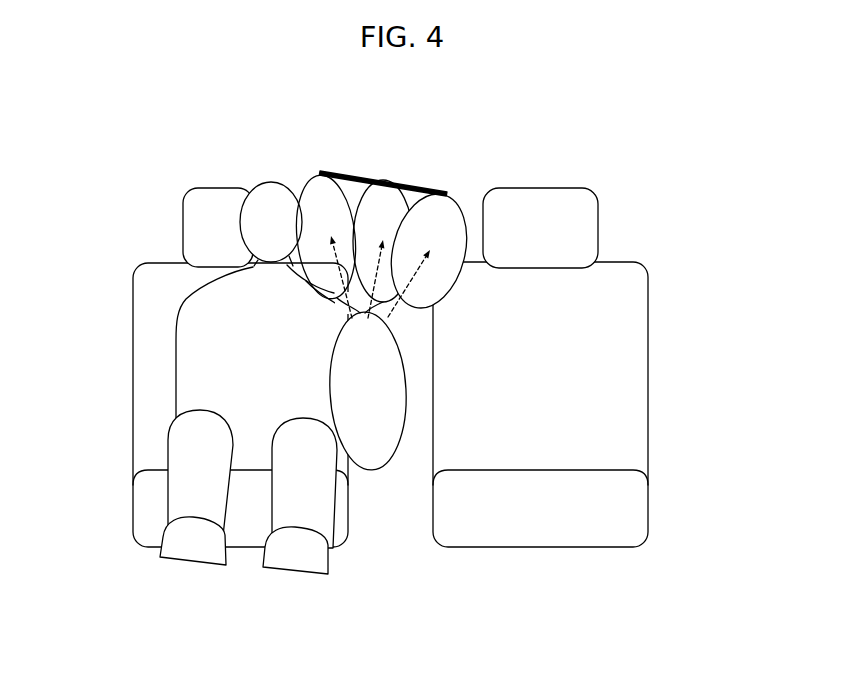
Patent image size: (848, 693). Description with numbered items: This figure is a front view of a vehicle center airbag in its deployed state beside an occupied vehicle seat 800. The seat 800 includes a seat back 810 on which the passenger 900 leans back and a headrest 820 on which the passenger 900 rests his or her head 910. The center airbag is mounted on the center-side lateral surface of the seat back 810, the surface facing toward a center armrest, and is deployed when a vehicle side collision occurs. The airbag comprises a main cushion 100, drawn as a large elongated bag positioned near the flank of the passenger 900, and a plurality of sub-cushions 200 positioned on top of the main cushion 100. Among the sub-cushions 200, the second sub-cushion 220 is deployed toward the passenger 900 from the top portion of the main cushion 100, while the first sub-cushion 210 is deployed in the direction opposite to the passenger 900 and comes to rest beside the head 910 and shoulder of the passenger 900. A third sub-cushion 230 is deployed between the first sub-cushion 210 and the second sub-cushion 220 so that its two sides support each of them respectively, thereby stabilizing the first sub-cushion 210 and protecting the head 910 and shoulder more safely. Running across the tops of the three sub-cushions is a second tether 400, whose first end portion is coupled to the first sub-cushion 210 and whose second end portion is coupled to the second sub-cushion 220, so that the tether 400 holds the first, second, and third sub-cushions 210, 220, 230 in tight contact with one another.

The main cushion 100 is at (382, 428).
The sub-cushions 200 is at (537, 389).
The first sub-cushion 210 is at (453, 217).
The second sub-cushion 220 is at (337, 193).
The third sub-cushion 230 is at (387, 195).
The second tether 400 is at (423, 187).
The vehicle seat 800 is at (180, 339).
The seat back 810 is at (152, 448).
The headrest 820 is at (217, 210).
The passenger 900 is at (193, 344).
The head 910 is at (270, 198).